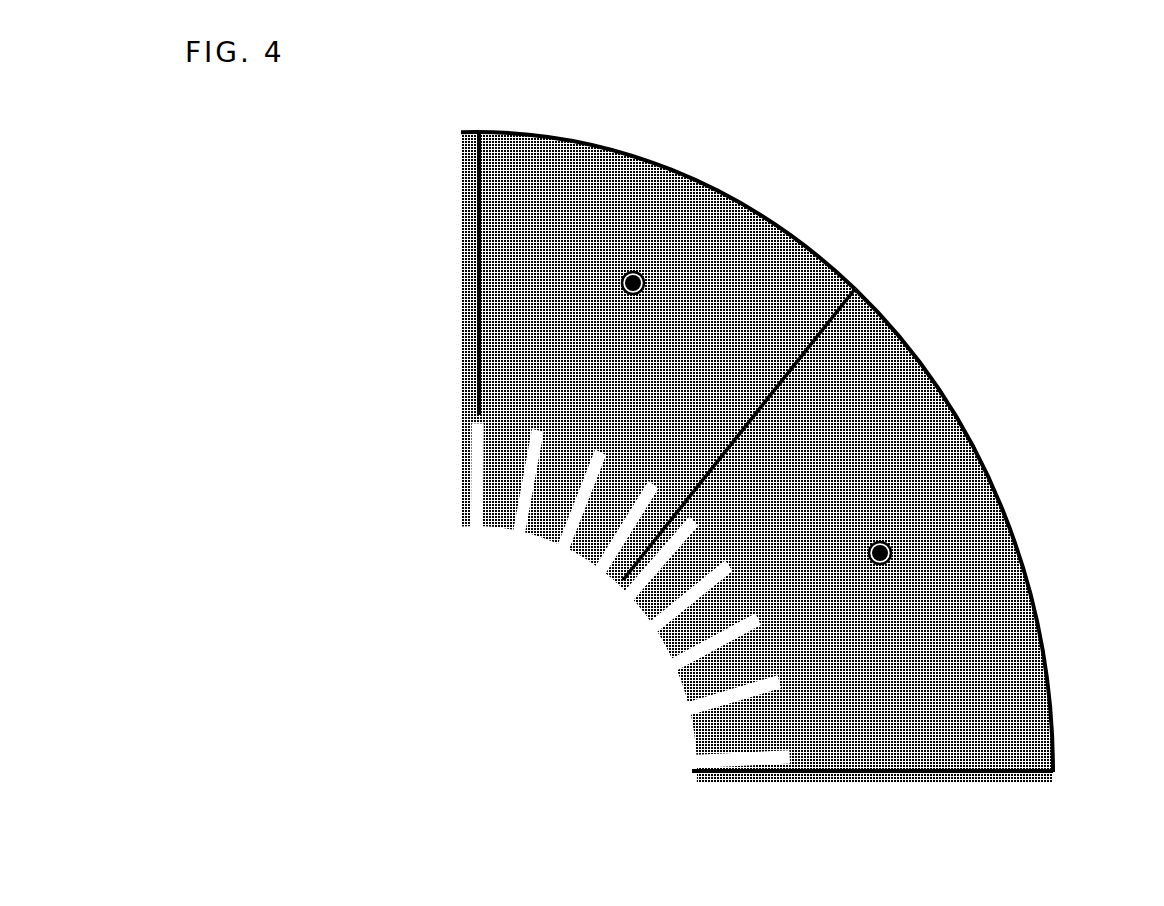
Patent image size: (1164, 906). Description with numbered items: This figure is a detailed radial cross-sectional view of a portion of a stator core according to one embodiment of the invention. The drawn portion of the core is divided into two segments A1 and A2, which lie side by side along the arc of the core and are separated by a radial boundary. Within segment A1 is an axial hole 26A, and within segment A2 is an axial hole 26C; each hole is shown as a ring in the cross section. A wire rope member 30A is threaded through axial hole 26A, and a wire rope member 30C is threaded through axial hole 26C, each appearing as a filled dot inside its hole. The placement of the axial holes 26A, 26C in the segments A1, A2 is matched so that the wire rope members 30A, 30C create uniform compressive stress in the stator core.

The axial hole 26A is at (631, 271).
The wire rope member 30A is at (645, 280).
The axial hole 26C is at (887, 542).
The wire rope member 30C is at (892, 550).
The segment A1 is at (725, 187).
The segment A2 is at (1003, 492).